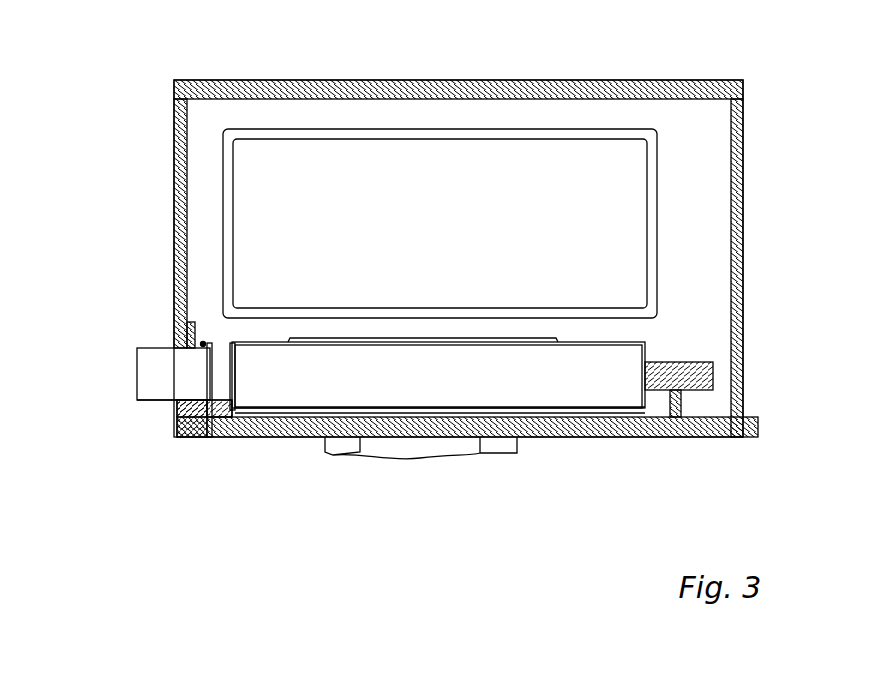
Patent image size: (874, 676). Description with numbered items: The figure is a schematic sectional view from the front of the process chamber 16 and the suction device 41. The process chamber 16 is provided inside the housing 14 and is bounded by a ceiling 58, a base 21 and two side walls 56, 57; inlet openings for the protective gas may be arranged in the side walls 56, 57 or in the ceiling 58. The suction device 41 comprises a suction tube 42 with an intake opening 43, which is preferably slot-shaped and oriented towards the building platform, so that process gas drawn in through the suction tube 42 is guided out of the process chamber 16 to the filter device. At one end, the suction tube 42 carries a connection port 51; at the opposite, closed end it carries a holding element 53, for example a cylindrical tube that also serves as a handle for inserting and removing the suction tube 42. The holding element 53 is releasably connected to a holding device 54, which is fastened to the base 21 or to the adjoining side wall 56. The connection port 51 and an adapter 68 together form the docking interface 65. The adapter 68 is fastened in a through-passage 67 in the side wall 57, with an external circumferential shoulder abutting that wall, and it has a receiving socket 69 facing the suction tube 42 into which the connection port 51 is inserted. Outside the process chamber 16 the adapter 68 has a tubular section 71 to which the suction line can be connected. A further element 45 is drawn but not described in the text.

The housing 14 is at (745, 197).
The process chamber 16 is at (710, 155).
The base 21 is at (715, 405).
The suction device 41 is at (603, 452).
The suction tube 42 is at (455, 368).
The intake opening 43 is at (345, 415).
The plate 45 is at (243, 440).
The connection port 51 is at (207, 440).
The holding element 53 is at (708, 378).
The holding device 54 is at (672, 437).
The side wall 56 is at (745, 325).
The side wall 57 is at (174, 207).
The ceiling 58 is at (237, 103).
The docking interface 65 is at (182, 340).
The through-passage 67 is at (168, 372).
The adapter 68 is at (193, 440).
The receiving socket 69 is at (222, 440).
The tubular section 71 is at (147, 405).